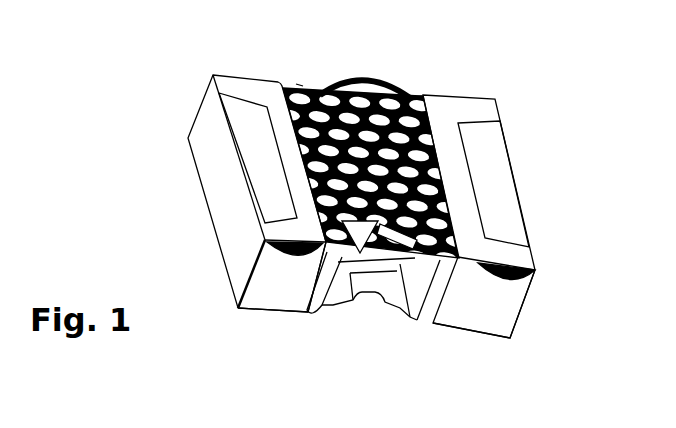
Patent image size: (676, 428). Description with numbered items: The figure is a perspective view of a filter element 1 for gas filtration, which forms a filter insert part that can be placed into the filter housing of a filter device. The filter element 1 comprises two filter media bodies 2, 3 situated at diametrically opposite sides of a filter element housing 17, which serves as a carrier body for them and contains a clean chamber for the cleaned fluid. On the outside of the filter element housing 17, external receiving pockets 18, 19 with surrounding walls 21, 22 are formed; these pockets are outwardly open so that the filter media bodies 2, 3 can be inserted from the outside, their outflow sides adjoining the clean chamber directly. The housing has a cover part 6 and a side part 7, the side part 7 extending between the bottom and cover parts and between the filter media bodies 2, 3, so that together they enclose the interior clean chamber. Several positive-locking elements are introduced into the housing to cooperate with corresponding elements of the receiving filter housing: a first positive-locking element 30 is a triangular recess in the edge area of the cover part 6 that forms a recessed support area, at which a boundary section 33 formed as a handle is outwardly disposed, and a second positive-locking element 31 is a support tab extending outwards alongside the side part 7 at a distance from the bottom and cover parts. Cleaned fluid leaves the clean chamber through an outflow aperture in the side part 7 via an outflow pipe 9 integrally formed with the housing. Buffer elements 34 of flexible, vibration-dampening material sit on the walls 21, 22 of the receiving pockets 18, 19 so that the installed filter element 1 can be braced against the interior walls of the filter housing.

The filter element 1 is at (477, 40).
The filter media body 2 is at (502, 238).
The filter media body 3 is at (226, 219).
The cover part 6 is at (403, 100).
The side part 7 is at (310, 88).
The outflow pipe 9 is at (355, 75).
The filter element housing 17 is at (300, 80).
The receiving pocket 18 is at (499, 227).
The receiving pocket 19 is at (256, 117).
The wall 21 is at (478, 325).
The wall 22 is at (263, 303).
The first positive-locking element 30 is at (388, 262).
The second positive-locking element 31 is at (360, 262).
The boundary section 33 is at (332, 315).
The buffer element 34 is at (263, 265).